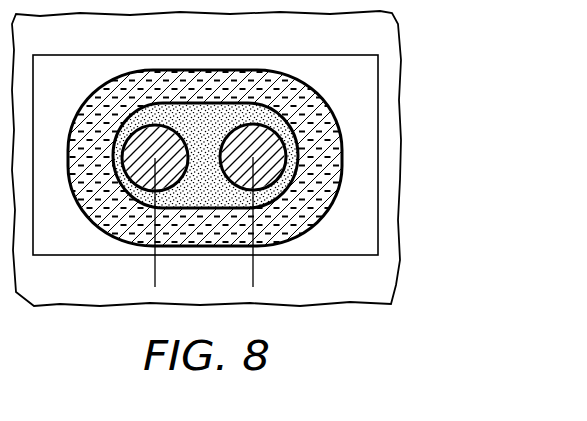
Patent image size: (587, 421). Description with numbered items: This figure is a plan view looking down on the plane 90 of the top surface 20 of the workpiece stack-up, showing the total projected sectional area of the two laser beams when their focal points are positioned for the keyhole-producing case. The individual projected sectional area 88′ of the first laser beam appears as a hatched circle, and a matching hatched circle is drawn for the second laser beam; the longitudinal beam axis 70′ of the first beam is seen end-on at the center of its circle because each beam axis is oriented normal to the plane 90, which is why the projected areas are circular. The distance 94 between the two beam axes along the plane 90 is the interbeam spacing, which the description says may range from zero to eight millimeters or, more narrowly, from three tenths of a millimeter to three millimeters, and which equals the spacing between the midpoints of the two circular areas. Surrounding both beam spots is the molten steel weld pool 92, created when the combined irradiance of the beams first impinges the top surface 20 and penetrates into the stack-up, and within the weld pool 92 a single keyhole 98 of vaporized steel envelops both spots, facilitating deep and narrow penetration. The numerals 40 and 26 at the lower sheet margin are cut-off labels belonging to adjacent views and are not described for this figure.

The top surface 20 is at (174, 46).
The plane of the top surface 90 is at (398, 145).
The molten steel weld pool 92 is at (313, 183).
The keyhole 98 is at (211, 136).
The longitudinal beam axis of the first laser beam 70′ is at (253, 157).
The individual projected sectional area of the first laser beam 88′ is at (275, 140).
The distance between the longitudinal beam axes 94 is at (253, 275).
The element 40 is at (14, 383).
The element 26 is at (14, 414).